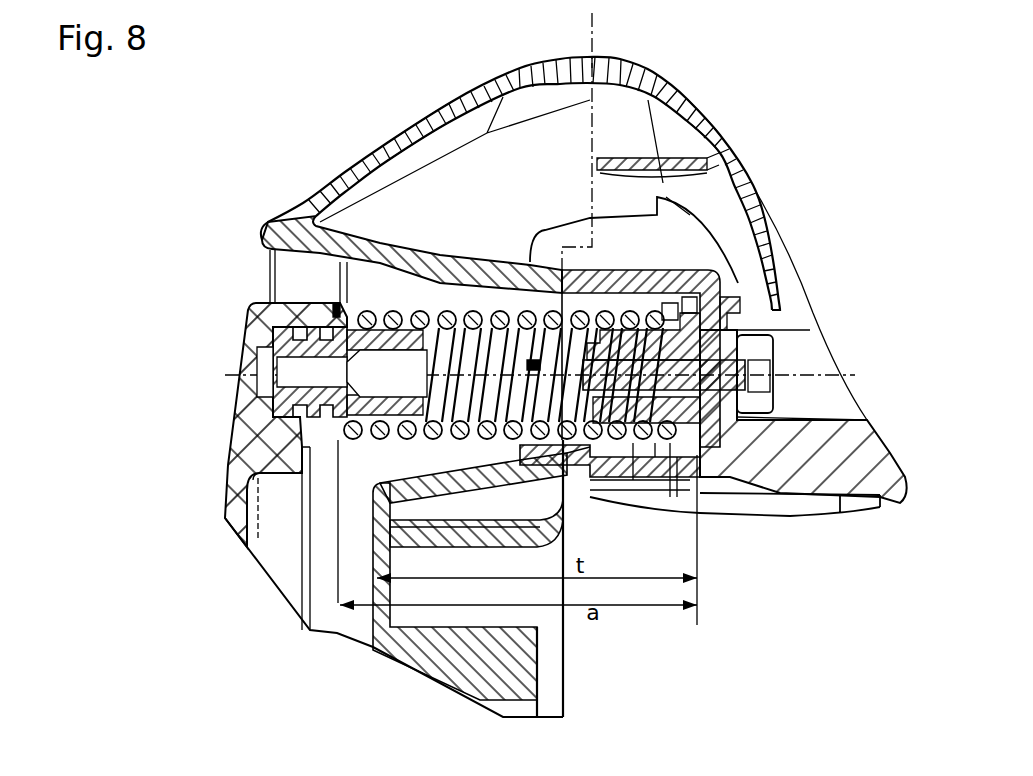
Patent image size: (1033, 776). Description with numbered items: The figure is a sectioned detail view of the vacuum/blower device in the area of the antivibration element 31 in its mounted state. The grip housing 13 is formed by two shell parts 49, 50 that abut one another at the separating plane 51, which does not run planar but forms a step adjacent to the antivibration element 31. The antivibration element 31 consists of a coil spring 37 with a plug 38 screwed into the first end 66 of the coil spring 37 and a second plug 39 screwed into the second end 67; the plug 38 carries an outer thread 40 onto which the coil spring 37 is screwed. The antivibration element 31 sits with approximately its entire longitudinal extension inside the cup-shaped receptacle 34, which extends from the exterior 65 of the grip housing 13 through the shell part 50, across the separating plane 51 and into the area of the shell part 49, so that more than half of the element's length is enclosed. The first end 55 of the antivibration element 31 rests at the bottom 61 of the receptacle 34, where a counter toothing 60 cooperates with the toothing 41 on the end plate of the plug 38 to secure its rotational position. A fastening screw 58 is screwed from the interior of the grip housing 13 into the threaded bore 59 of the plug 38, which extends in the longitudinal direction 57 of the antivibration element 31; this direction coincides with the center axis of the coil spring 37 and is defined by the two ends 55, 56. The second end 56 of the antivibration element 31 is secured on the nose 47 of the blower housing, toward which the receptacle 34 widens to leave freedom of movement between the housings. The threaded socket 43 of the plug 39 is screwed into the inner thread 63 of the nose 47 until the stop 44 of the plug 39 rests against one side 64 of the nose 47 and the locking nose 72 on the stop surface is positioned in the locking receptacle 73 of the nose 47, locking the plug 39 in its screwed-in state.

The grip housing 13 is at (507, 85).
The shell part 50 is at (433, 120).
The shell part 49 is at (697, 133).
The antivibration element 31 is at (457, 300).
The locking nose 72 is at (320, 300).
The locking receptacle 73 is at (328, 300).
The nose 47 is at (272, 303).
The plug 39 is at (325, 415).
The stop 44 is at (318, 420).
The side of the nose 64 is at (362, 432).
The first end of the coil spring 66 is at (345, 425).
The inner thread 63 is at (278, 330).
The threaded socket 43 is at (257, 349).
The second end of the antivibration element 56 is at (262, 393).
The receptacle 34 is at (627, 273).
The counter toothing 60 is at (705, 292).
The toothing 41 is at (727, 310).
The bottom of the receptacle 61 is at (740, 312).
The first end of the antivibration element 55 is at (775, 327).
The longitudinal direction 57 is at (840, 378).
The fastening screw 58 is at (838, 410).
The threaded bore 59 is at (735, 478).
The second end of the coil spring 67 is at (700, 493).
The outer thread 40 is at (672, 497).
The plug 38 is at (637, 490).
The coil spring 37 is at (581, 473).
The separating plane 51 is at (563, 727).
The exterior of the grip housing 65 is at (373, 617).